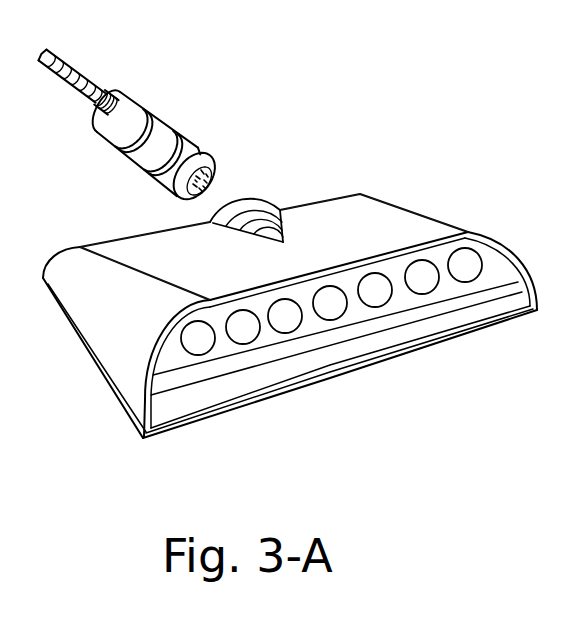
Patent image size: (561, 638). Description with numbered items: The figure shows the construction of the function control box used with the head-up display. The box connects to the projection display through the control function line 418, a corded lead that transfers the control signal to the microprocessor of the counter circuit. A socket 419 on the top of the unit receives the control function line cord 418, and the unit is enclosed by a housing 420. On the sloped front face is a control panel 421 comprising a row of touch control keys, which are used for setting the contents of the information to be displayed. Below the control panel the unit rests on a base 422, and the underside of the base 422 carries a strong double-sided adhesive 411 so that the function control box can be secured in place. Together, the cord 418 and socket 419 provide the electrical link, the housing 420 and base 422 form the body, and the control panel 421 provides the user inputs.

The strong double-sided adhesive 411 is at (242, 438).
The control function line 418 is at (168, 122).
The socket 419 is at (258, 204).
The housing 420 is at (373, 217).
The control panel 421 is at (472, 250).
The base 422 is at (388, 386).